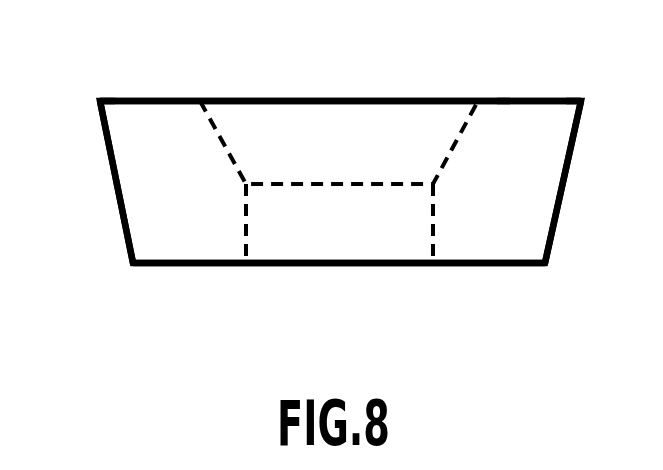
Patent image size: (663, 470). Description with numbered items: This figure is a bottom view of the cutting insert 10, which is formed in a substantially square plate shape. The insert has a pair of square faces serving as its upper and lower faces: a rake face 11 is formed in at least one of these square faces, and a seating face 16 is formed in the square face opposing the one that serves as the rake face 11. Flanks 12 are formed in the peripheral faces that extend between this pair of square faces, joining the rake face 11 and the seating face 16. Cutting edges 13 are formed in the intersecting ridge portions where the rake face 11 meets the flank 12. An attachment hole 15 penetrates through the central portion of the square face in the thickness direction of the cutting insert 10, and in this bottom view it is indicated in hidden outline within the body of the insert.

The cutting insert 10 is at (565, 264).
The rake face 11 is at (528, 100).
The flank 12 is at (112, 173).
The cutting edge 13 is at (100, 100).
The attachment hole 15 is at (223, 137).
The seating face 16 is at (460, 266).